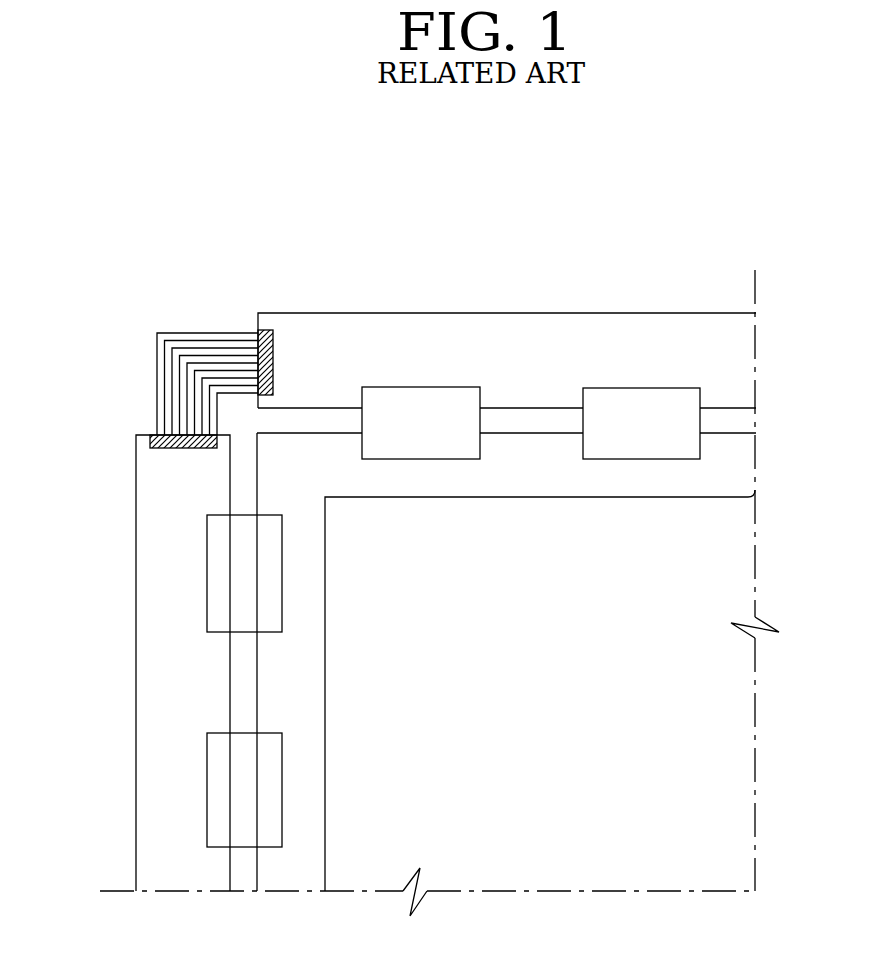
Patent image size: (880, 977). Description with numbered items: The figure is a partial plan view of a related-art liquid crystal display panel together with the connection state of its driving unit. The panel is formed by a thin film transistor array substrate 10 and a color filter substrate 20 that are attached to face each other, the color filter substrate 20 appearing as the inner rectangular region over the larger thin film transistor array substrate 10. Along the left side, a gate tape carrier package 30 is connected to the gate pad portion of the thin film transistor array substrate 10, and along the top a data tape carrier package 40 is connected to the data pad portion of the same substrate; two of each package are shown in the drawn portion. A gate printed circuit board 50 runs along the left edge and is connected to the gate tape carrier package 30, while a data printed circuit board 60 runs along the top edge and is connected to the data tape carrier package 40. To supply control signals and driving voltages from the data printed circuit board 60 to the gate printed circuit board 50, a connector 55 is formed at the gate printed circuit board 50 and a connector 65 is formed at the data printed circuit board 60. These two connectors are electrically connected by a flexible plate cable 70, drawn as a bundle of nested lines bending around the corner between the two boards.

The thin film transistor array substrate 10 is at (297, 863).
The color filter substrate 20 is at (522, 863).
The gate tape carrier package 30 is at (222, 576).
The data tape carrier package 40 is at (443, 402).
The gate printed circuit board 50 is at (152, 490).
The connector 55 is at (135, 440).
The data printed circuit board 60 is at (364, 327).
The connector 65 is at (258, 330).
The flexible plate cable 70 is at (205, 330).